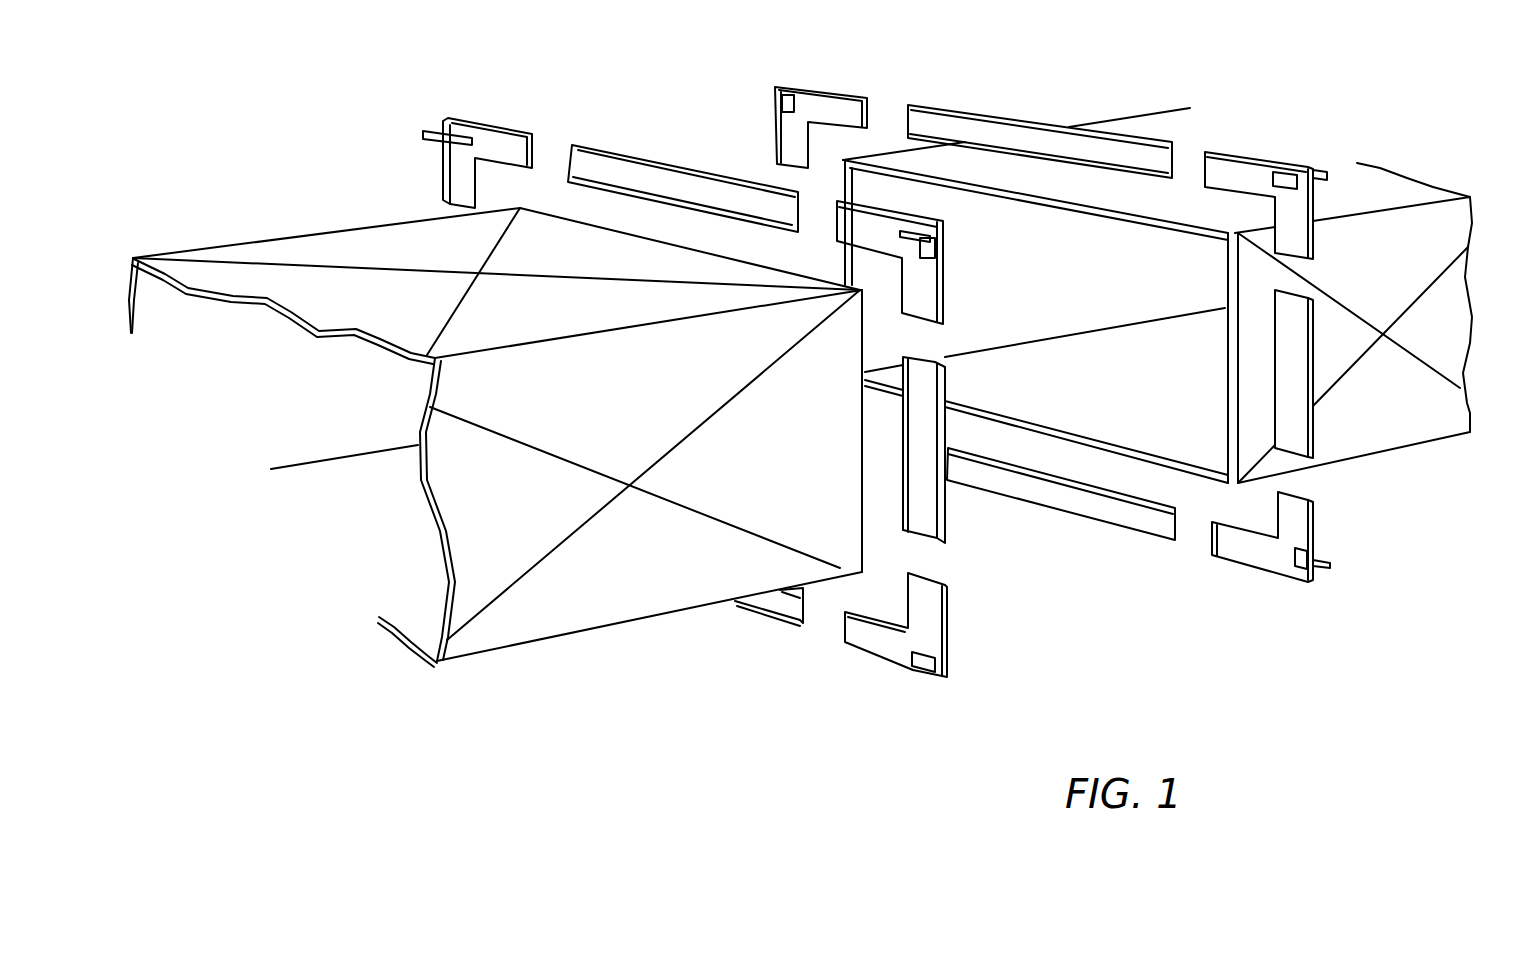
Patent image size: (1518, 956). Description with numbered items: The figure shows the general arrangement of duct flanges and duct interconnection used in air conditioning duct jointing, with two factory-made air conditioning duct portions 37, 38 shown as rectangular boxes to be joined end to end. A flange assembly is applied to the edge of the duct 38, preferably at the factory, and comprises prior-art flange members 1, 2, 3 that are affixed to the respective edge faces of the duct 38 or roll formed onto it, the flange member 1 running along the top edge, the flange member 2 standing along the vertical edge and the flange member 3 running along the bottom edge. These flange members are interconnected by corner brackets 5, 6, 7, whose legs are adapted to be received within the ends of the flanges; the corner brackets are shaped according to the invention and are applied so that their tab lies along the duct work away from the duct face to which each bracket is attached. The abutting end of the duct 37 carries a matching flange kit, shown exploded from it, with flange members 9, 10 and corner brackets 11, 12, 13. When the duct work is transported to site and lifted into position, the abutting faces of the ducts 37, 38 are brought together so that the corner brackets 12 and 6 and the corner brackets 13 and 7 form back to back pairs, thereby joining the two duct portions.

The flange member 1 is at (1046, 140).
The flange member 2 is at (1300, 412).
The flange member 3 is at (1098, 512).
The corner bracket 5 is at (839, 108).
The corner bracket 6 is at (1246, 168).
The corner bracket 7 is at (1276, 558).
The flange member 9 is at (645, 175).
The flange member 10 is at (930, 512).
The corner bracket 11 is at (506, 147).
The corner bracket 12 is at (929, 295).
The corner bracket 13 is at (885, 643).
The air conditioning duct portion 37 is at (562, 622).
The air conditioning duct portion 38 is at (1410, 433).